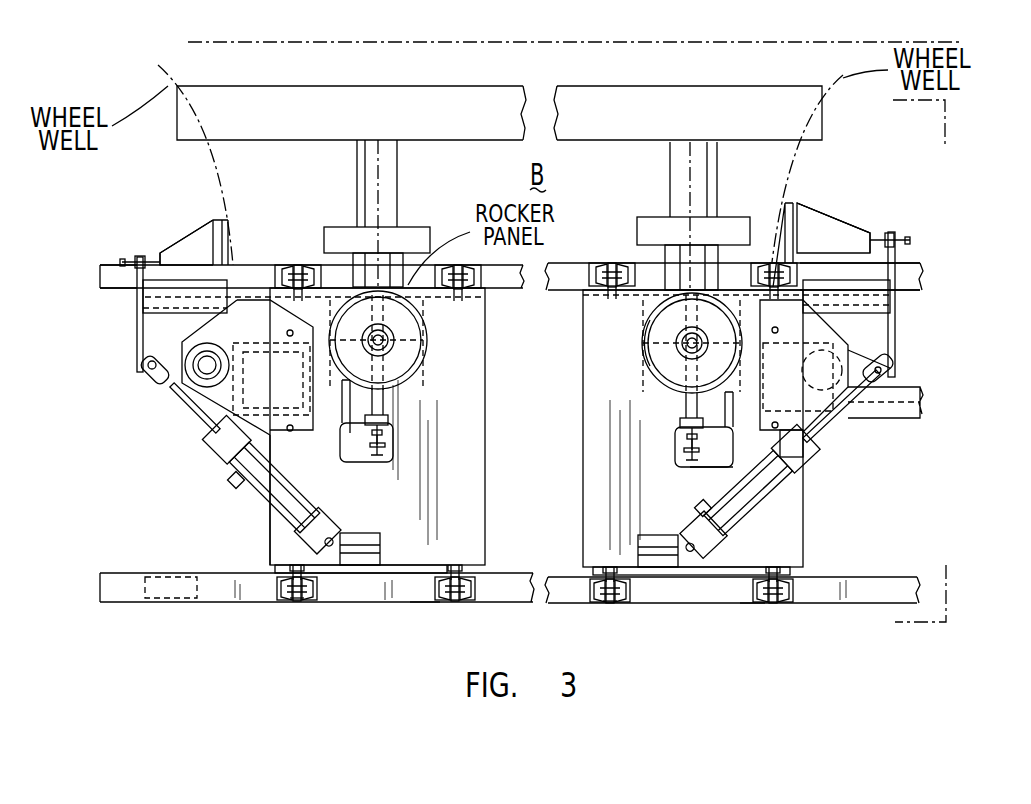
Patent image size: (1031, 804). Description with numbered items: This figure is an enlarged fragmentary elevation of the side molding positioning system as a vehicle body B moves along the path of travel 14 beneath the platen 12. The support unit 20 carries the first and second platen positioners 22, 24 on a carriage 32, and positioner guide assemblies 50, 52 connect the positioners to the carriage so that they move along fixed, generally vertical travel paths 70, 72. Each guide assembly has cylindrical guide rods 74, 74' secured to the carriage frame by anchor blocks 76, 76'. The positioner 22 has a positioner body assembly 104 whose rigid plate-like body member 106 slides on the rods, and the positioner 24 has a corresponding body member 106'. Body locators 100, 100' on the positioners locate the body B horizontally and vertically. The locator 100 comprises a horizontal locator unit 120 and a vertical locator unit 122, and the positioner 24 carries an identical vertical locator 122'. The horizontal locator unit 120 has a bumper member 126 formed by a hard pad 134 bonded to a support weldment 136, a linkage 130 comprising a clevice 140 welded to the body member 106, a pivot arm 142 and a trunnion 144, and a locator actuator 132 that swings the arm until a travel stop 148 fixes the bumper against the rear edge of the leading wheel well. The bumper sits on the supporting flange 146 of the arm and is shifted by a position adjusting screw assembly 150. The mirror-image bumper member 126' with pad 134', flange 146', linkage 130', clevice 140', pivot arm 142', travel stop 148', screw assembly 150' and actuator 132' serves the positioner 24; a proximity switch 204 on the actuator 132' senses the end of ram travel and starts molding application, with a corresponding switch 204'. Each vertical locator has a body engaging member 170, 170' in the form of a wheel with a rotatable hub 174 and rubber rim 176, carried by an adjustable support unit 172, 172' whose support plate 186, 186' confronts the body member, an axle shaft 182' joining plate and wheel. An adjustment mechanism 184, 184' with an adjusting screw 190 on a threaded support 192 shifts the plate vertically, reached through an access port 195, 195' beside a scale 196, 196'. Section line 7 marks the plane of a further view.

The path of travel 14 is at (342, 34).
The platen 12 is at (462, 82).
The travel path 70 is at (386, 180).
The travel path 72 is at (672, 168).
The travel stop 148 is at (377, 253).
The mounting block 148' is at (693, 253).
The pad 134 is at (250, 242).
The bracket 134' is at (759, 216).
The support weldment 136 is at (812, 215).
The bumper member 126 is at (176, 223).
The angled bracket 126' is at (858, 198).
The body locator 100 is at (151, 235).
The body locator 100' is at (900, 208).
The position adjusting screw assembly 150 is at (91, 248).
The adjusting bolt 150' is at (937, 221).
The bumper supporting flange 146 is at (472, 284).
The upper rail 146' is at (902, 260).
The horizontal vehicle body locator unit 120 is at (128, 290).
The linkage 130 is at (82, 318).
The vertical plate 130' is at (942, 304).
The clevice 140 is at (180, 367).
The pivot bracket 140' is at (878, 366).
The pivot arm 142 is at (149, 387).
The pivot pin 142' is at (922, 335).
The trunnion 144 is at (180, 398).
The proximity switch 204 is at (184, 469).
The cylinder port 204' is at (795, 486).
The locator actuator 132 is at (243, 465).
The actuator 132' is at (811, 461).
The support unit 20 is at (268, 528).
The first platen positioner 22 is at (452, 506).
The second platen positioner 24 is at (810, 554).
The cylindrical guide rods 74 is at (515, 455).
The rail clamp 74' is at (595, 606).
The carriage 32 is at (268, 606).
The positioner body assembly 104 is at (522, 586).
The plate-like body member 106 is at (403, 544).
The cylinder anchor block 106' is at (689, 591).
The anchor blocks 76 is at (324, 619).
The clamp nut 76' is at (626, 623).
The positioner guide assembly 52 is at (425, 603).
The positioner guide assembly 50 is at (760, 603).
The vertical locator unit 122 is at (427, 340).
The roller wheel 122' is at (641, 344).
The support plate 186 is at (435, 340).
The wheel rim 186' is at (638, 380).
The wheel hub 182' is at (624, 378).
The rotatable hub 174 is at (665, 330).
The vehicle body engaging rim 176 is at (642, 330).
The vehicle body engaging member 170 is at (447, 414).
The wheel shaft 170' is at (621, 444).
The adjustable support unit 172 is at (422, 455).
The adjusting screw 172' is at (620, 477).
The adjustment mechanism 184 is at (349, 459).
The clamp bracket 184' is at (698, 471).
The access port 195 is at (373, 475).
The clamp bolt 195' is at (791, 488).
The scale 196 is at (315, 422).
The bracket arm 196' is at (810, 454).
The adjusting screw 190 is at (805, 445).
The threaded support 192 is at (700, 468).
The section line 7 is at (906, 360).